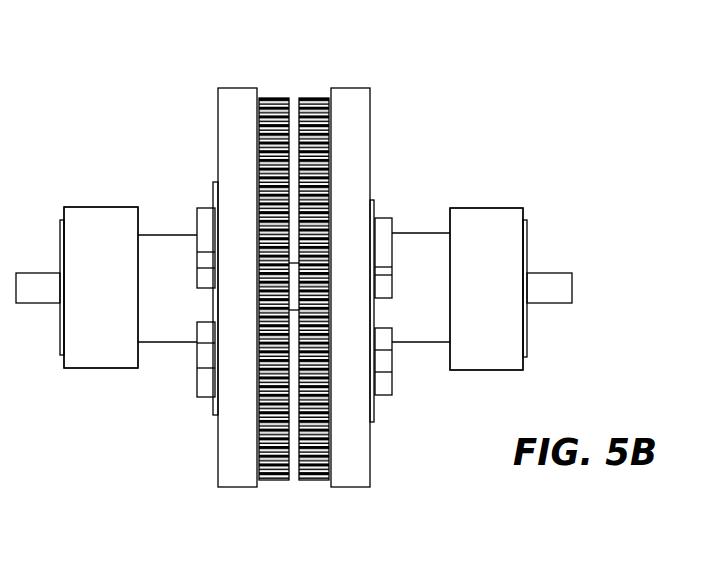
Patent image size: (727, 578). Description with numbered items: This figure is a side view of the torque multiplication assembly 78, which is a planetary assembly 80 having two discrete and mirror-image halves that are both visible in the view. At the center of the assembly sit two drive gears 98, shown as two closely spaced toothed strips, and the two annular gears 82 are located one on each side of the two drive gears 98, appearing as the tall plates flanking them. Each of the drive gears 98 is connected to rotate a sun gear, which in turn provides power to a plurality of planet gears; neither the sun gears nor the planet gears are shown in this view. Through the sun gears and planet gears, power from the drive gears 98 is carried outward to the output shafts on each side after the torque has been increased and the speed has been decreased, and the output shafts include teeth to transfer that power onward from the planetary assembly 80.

The torque multiplication assembly 78 is at (497, 105).
The planetary assembly 80 is at (147, 101).
The annular gears 82 is at (238, 97).
The drive gears 98 is at (272, 481).